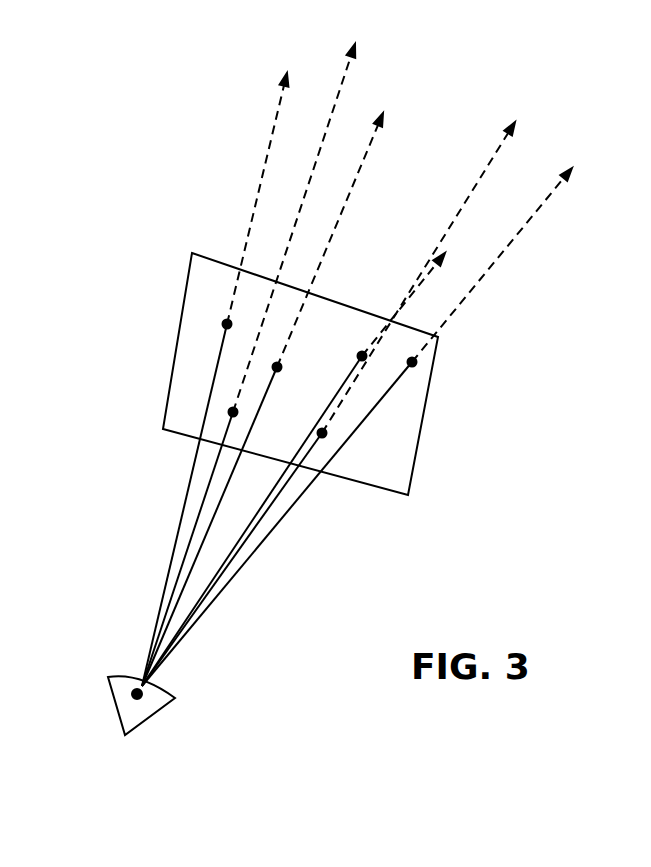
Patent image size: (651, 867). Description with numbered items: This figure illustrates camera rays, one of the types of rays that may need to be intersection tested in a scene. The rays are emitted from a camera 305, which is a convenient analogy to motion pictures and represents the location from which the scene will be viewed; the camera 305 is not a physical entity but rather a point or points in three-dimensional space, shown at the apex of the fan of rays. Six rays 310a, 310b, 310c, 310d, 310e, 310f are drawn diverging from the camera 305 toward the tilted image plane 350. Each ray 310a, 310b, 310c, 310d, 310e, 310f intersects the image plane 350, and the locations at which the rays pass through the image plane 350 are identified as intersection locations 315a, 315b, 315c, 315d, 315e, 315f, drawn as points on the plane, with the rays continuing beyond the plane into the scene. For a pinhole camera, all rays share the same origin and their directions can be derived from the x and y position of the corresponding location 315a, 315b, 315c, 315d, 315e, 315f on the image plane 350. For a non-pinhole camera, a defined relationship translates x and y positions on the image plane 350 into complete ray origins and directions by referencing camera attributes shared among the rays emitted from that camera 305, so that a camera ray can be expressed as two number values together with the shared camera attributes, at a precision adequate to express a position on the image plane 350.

The camera 305 is at (140, 720).
The image plane 350 is at (197, 272).
The ray 310a is at (190, 482).
The ray 310b is at (187, 528).
The ray 310c is at (185, 577).
The ray 310d is at (275, 495).
The ray 310e is at (258, 553).
The ray 310f is at (257, 542).
The intersection location 315a is at (323, 434).
The intersection location 315b is at (363, 357).
The intersection location 315c is at (414, 362).
The intersection location 315d is at (226, 324).
The intersection location 315e is at (276, 367).
The intersection location 315f is at (232, 412).